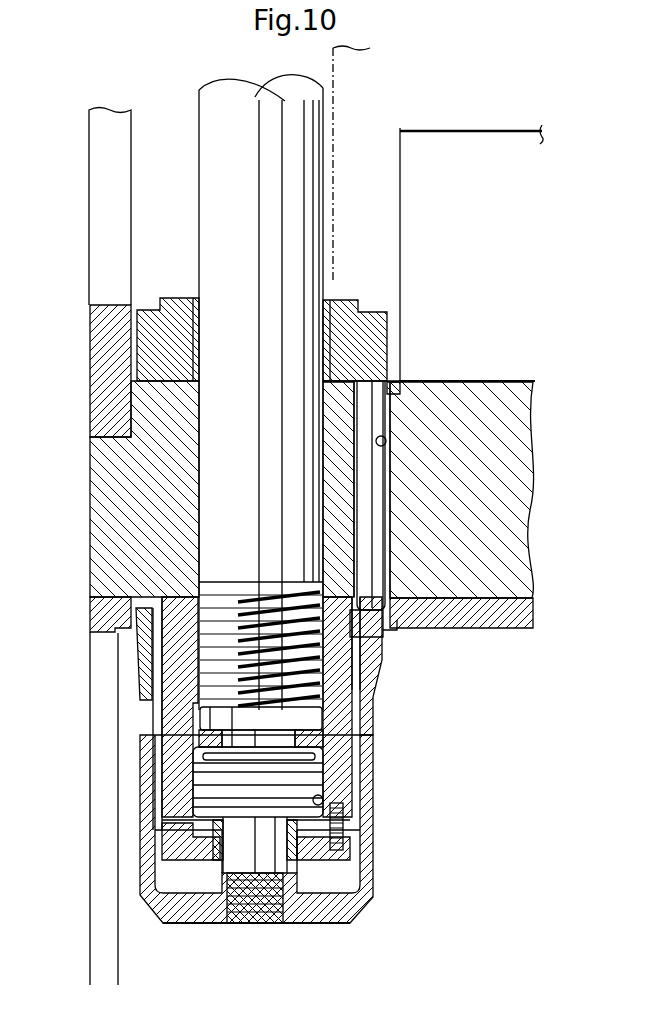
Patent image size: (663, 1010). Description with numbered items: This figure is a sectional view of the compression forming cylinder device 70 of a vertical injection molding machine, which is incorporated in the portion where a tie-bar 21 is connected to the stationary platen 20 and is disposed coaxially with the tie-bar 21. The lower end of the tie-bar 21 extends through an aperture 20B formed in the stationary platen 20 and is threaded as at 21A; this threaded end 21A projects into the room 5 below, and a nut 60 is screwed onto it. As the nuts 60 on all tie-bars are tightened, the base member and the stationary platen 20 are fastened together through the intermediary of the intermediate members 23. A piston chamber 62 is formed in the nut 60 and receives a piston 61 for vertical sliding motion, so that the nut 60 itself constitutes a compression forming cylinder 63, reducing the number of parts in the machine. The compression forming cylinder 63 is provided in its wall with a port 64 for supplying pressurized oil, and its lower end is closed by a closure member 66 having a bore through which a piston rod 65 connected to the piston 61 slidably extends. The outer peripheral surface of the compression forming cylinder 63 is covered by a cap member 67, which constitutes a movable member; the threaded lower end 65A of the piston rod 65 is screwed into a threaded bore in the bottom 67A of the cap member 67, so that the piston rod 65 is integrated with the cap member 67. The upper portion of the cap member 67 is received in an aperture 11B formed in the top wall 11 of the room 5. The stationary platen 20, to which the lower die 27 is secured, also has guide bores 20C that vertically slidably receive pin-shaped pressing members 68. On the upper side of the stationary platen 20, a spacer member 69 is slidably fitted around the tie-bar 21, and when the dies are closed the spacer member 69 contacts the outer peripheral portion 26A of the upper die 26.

The room 5 is at (125, 945).
The top wall 11 is at (520, 612).
The aperture 11B is at (390, 630).
The stationary platen 20 is at (112, 562).
The aperture 20B is at (208, 462).
The guide bore 20C is at (386, 443).
The tie-bar 21 is at (212, 503).
The threaded end 21A is at (210, 655).
The intermediate member 23 is at (97, 350).
The upper die 26 is at (525, 117).
The outer peripheral portion 26A is at (387, 274).
The lower die 27 is at (520, 378).
The nut 60 is at (382, 662).
The piston 61 is at (307, 773).
The piston chamber 62 is at (323, 798).
The compression forming cylinder 63 is at (177, 747).
The port 64 is at (183, 818).
The piston rod 65 is at (283, 865).
The threaded lower end 65A is at (248, 915).
The closure member 66 is at (183, 860).
The cap member 67 is at (372, 832).
The bottom 67A is at (208, 915).
The pressing member 68 is at (372, 487).
The spacer member 69 is at (375, 352).
The compression forming cylinder device 70 is at (337, 872).